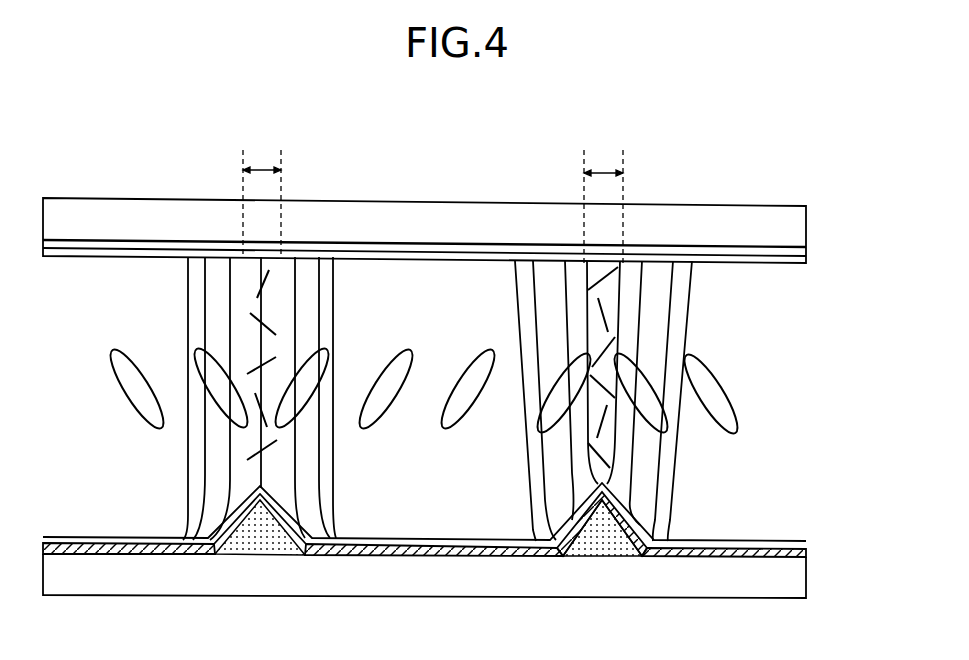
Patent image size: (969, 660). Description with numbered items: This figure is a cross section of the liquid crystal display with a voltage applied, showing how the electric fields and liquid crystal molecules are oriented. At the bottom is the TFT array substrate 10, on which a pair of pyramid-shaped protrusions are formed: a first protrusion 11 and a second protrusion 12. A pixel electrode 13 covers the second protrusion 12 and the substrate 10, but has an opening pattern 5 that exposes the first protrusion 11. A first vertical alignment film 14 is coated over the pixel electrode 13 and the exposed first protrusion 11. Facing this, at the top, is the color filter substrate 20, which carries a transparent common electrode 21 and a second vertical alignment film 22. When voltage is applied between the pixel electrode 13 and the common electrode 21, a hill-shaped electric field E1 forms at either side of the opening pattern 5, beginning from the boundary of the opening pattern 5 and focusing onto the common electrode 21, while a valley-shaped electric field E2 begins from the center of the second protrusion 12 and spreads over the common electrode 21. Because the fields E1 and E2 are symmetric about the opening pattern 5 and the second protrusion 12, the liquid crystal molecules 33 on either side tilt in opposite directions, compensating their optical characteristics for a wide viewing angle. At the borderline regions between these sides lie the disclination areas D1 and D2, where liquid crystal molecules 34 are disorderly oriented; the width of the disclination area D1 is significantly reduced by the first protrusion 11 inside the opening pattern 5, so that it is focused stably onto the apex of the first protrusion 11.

The color filter substrate 20 is at (800, 230).
The common electrode 21 is at (793, 252).
The second vertical alignment film 22 is at (782, 262).
The liquid crystal molecules 34 is at (268, 329).
The liquid crystal molecules 33 is at (372, 418).
The opening pattern 5 is at (308, 537).
The first vertical alignment film 14 is at (775, 546).
The pixel electrode 13 is at (807, 552).
The TFT array substrate 10 is at (797, 576).
The first protrusion 11 is at (262, 556).
The second protrusion 12 is at (607, 558).
The hill-shaped electric field E1 is at (333, 462).
The valley-shaped electric field E2 is at (658, 480).
The disclination area D1 is at (261, 200).
The disclination area D2 is at (603, 205).